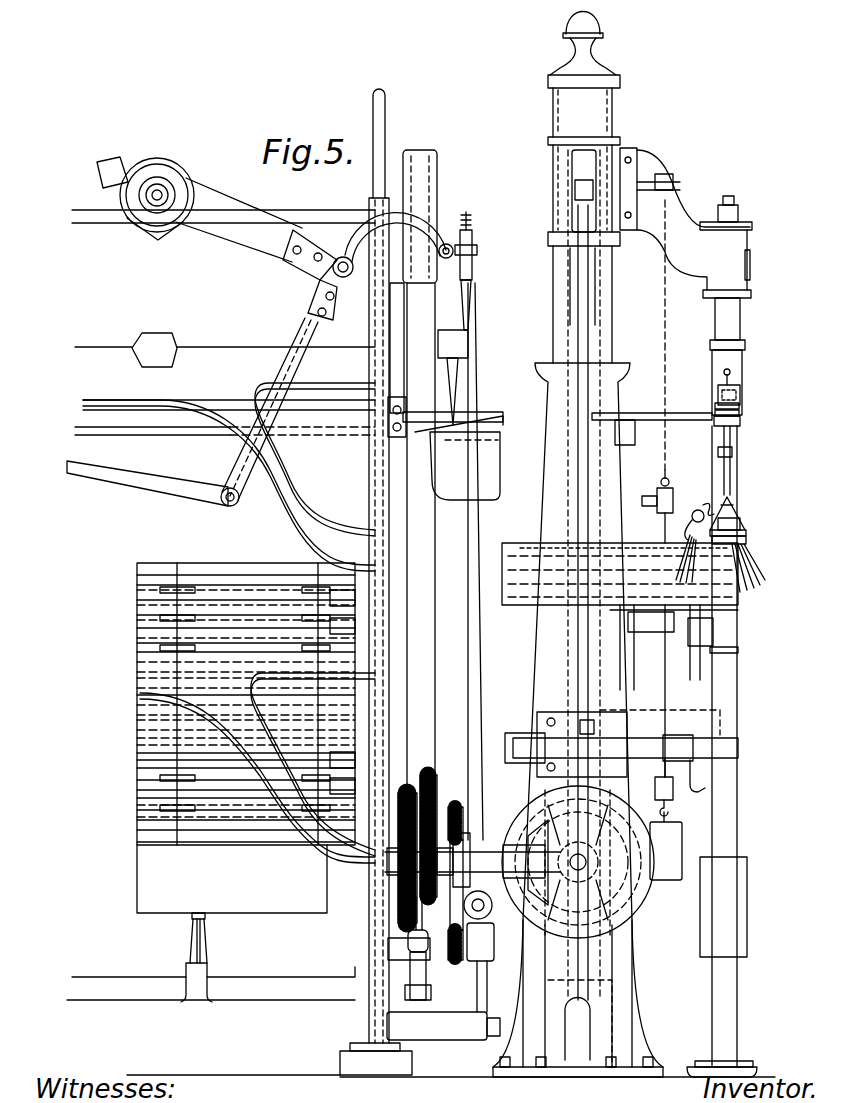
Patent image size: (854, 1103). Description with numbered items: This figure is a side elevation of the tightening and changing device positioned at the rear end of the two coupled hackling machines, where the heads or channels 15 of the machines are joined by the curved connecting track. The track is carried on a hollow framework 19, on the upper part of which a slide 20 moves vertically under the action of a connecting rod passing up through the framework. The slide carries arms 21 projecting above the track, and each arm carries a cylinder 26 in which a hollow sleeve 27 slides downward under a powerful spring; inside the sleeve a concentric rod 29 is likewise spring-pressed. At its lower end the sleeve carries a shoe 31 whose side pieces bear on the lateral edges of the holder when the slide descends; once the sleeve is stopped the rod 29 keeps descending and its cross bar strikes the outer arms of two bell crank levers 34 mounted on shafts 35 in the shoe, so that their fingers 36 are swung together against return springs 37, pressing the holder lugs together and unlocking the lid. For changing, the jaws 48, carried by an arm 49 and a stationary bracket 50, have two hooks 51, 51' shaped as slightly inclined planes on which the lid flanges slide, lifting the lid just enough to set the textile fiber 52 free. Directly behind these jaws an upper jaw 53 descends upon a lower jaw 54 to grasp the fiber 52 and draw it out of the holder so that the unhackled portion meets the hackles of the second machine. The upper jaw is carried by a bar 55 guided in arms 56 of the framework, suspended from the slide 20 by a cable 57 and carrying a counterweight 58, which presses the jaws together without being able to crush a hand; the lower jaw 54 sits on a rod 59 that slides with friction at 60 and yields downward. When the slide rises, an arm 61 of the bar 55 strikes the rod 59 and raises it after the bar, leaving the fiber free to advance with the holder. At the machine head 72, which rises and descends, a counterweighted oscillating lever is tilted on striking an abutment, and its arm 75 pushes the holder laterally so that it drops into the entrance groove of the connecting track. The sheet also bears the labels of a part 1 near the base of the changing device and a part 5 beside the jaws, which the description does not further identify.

The table 1 is at (758, 568).
The bracket 5 is at (747, 540).
The head or channel 15 is at (160, 432).
The hollow framework 19 is at (546, 520).
The slide 20 is at (593, 165).
The arm 21 is at (693, 220).
The cylinder 26 is at (742, 252).
The hollow sleeve 27 is at (741, 327).
The concentric rod 29 is at (715, 396).
The shoe 31 is at (742, 386).
The bell crank lever 34 is at (740, 405).
The shaft 35 is at (740, 413).
The finger 36 is at (745, 423).
The return spring 37 is at (731, 373).
The jaws 48 is at (738, 515).
The arm 49 is at (733, 473).
The stationary bracket 50 is at (680, 425).
The hook 51 is at (715, 503).
The hook 51' is at (756, 521).
The textile fiber 52 is at (750, 552).
The upper jaw 53 is at (699, 510).
The lower jaw 54 is at (676, 513).
The bar 55 is at (662, 649).
The arms of the framework 56 is at (714, 636).
The cable 57 is at (667, 351).
The counterweight 58 is at (684, 846).
The rod 59 is at (702, 616).
The friction guide 60 is at (706, 718).
The arm 61 is at (690, 790).
The head or channel 72 is at (398, 377).
The arm 75 is at (458, 386).